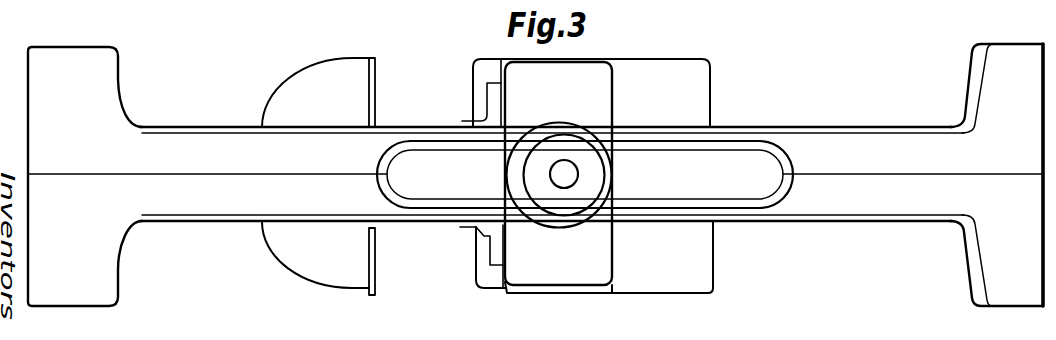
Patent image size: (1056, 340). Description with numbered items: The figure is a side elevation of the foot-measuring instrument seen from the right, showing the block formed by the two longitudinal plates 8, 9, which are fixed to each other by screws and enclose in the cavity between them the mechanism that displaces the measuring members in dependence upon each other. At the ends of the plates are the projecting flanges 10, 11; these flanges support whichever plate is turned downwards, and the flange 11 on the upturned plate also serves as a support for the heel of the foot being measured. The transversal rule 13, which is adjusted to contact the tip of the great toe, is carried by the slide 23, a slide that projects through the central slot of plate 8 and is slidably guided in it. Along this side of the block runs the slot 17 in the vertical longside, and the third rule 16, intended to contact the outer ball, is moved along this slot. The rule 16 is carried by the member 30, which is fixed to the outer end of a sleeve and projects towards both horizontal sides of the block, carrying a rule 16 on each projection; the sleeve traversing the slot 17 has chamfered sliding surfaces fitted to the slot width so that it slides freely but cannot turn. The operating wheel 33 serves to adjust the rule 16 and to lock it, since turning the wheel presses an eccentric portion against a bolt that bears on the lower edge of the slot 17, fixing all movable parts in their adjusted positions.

The longitudinal plate 8 is at (862, 208).
The longitudinal plate 9 is at (860, 137).
The projecting flange 10 is at (113, 78).
The projecting flange 11 is at (977, 58).
The transversal rule 13 is at (378, 93).
The third rule 16 is at (702, 83).
The slot 17 is at (753, 158).
The slide 23 is at (293, 92).
The member 30 is at (597, 67).
The operating wheel 33 is at (553, 123).